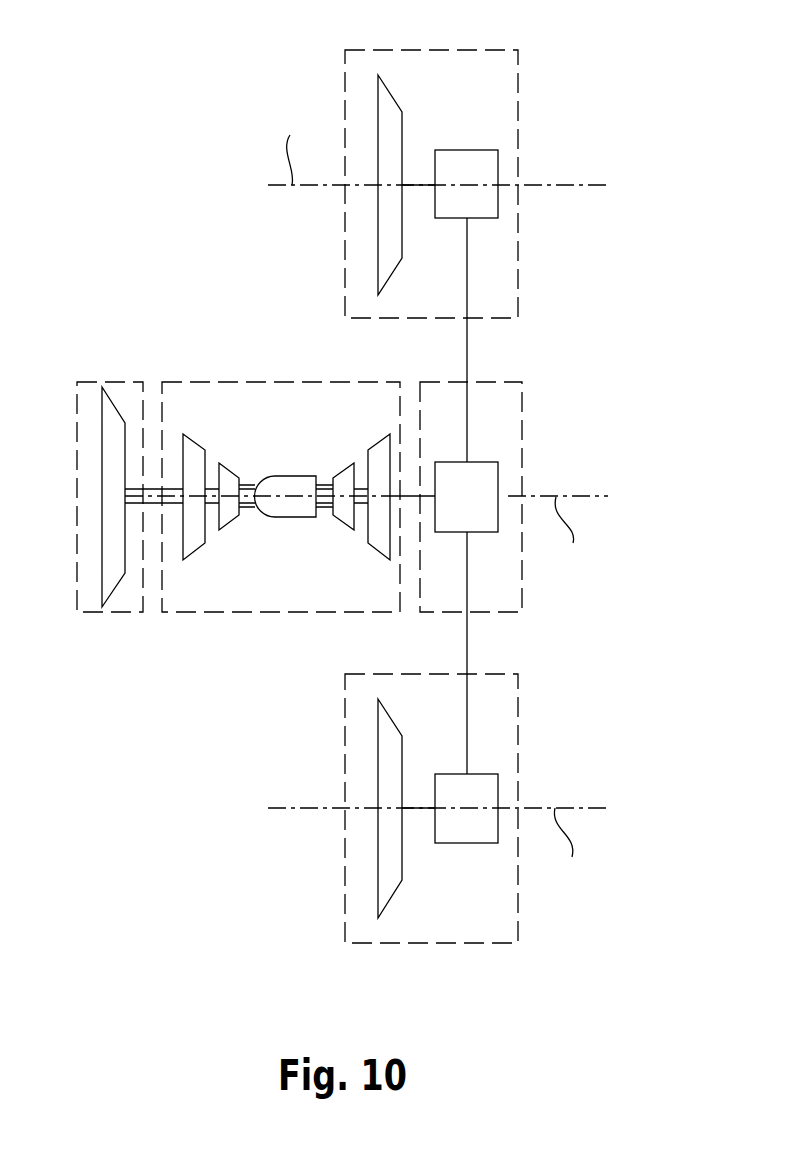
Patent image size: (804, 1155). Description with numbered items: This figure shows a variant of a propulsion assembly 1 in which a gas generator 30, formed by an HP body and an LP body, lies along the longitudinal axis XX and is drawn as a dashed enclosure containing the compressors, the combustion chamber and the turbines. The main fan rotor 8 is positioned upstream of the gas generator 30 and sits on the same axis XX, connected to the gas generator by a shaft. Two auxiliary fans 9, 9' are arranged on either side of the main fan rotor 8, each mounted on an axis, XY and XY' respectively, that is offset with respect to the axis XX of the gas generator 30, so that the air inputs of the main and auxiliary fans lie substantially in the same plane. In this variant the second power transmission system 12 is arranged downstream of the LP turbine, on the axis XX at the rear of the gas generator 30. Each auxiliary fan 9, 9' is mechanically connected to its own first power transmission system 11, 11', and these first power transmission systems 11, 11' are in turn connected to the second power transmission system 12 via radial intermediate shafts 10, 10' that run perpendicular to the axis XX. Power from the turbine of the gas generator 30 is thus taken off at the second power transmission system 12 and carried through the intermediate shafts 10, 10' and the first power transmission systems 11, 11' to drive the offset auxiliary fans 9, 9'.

The propulsion assembly 1 is at (660, 96).
The main fan rotor 8 is at (108, 562).
The auxiliary fan 9 is at (374, 808).
The auxiliary fan 9' is at (374, 185).
The intermediate shaft 10 is at (517, 653).
The intermediate shaft 10' is at (518, 340).
The first power transmission system 11 is at (499, 794).
The first power transmission system 11' is at (501, 172).
The second power transmission system 12 is at (485, 465).
The gas generator 30 is at (242, 582).